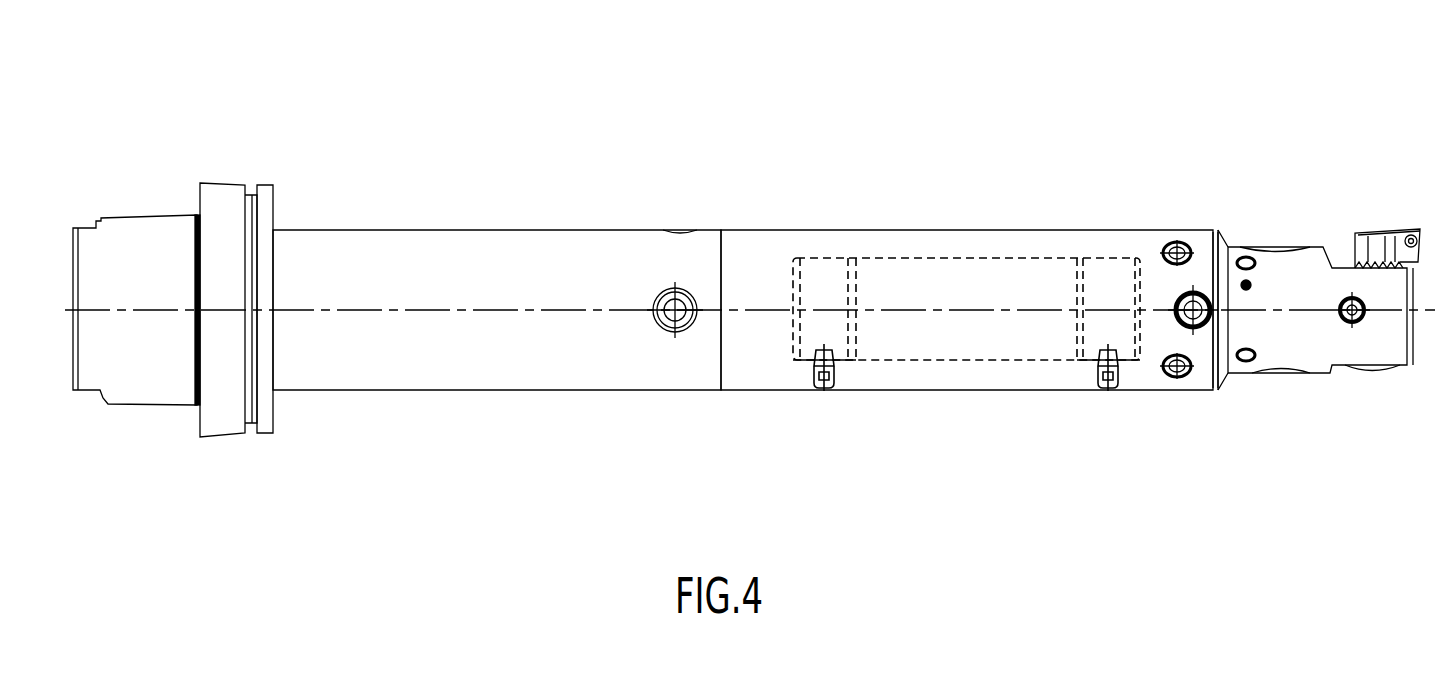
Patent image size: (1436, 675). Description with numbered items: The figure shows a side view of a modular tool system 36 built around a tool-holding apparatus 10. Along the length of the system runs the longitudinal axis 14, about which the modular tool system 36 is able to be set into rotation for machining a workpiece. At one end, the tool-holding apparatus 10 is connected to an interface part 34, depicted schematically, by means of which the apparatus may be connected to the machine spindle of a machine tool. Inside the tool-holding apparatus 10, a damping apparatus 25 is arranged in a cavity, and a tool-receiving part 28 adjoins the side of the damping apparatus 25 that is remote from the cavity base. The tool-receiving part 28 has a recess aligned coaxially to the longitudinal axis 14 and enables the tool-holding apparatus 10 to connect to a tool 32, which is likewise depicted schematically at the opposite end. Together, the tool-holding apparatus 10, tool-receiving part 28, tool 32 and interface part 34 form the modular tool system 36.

The modular tool system 36 is at (750, 232).
The longitudinal axis 14 is at (122, 308).
The interface part 34 is at (443, 226).
The tool-holding apparatus 10 is at (867, 226).
The damping apparatus 25 is at (979, 256).
The tool-receiving part 28 is at (1222, 255).
The tool 32 is at (1305, 270).